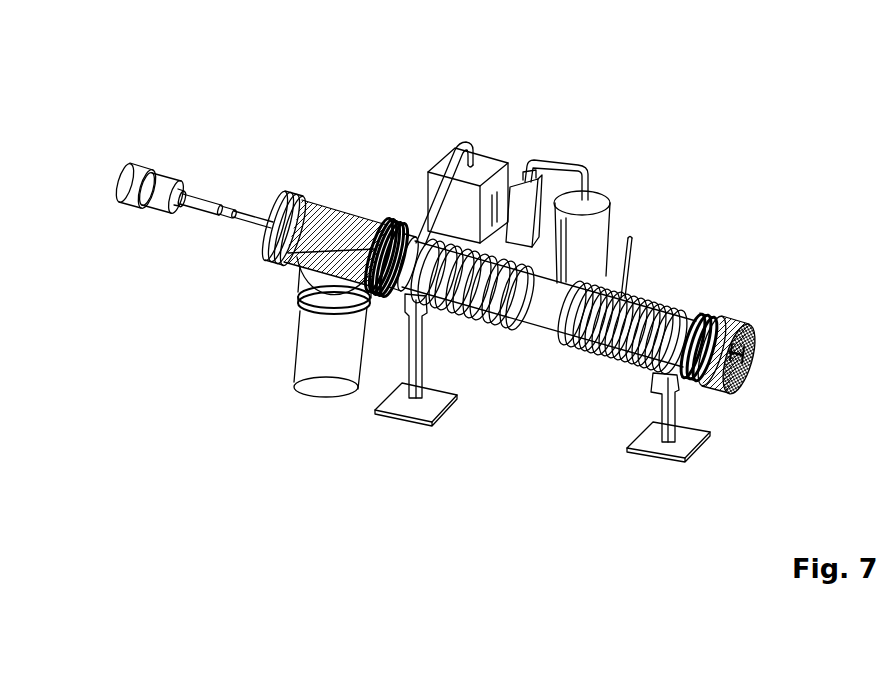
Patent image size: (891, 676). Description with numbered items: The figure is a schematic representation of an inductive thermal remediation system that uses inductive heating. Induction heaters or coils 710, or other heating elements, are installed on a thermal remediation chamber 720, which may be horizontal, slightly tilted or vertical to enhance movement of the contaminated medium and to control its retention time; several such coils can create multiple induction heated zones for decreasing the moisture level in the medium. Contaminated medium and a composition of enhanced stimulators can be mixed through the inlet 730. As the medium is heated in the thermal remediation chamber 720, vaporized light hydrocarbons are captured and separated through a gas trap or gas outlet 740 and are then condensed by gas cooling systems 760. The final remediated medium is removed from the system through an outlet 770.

The induction heaters or coils 710 is at (462, 339).
The thermal remediation chamber 720 is at (533, 350).
The inlet 730 is at (760, 351).
The gas trap or gas outlet 740 is at (411, 207).
The gas cooling systems 760 is at (486, 146).
The outlet 770 is at (294, 306).